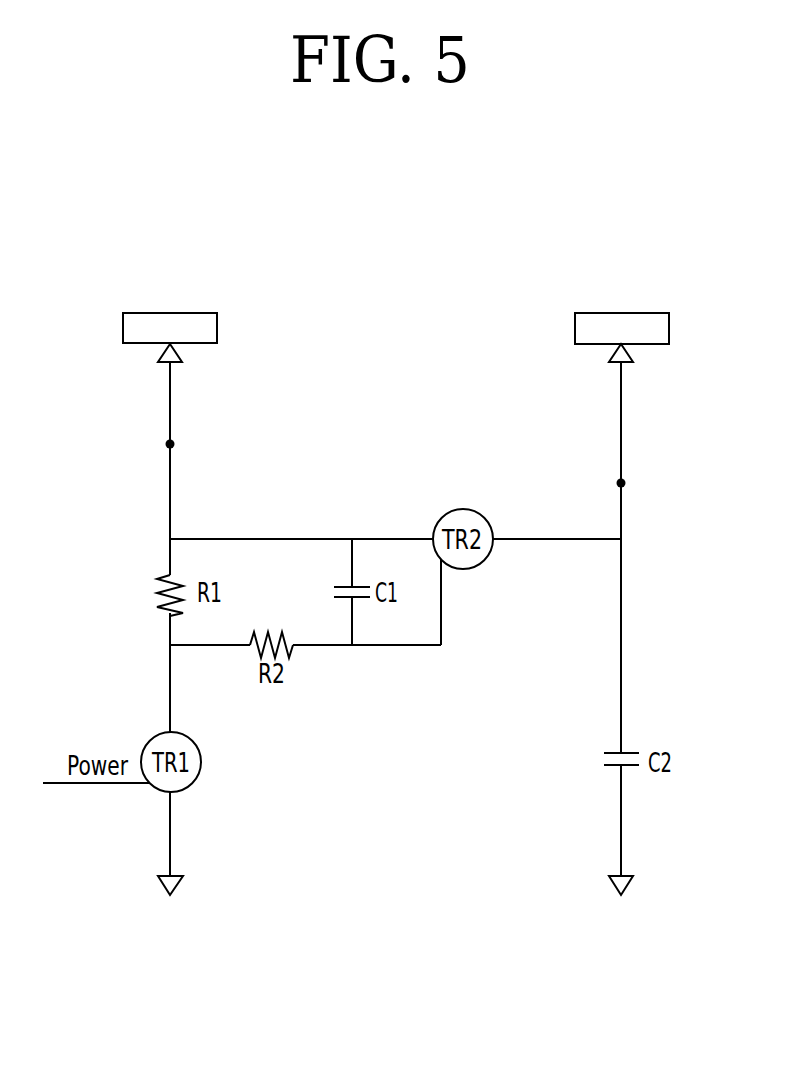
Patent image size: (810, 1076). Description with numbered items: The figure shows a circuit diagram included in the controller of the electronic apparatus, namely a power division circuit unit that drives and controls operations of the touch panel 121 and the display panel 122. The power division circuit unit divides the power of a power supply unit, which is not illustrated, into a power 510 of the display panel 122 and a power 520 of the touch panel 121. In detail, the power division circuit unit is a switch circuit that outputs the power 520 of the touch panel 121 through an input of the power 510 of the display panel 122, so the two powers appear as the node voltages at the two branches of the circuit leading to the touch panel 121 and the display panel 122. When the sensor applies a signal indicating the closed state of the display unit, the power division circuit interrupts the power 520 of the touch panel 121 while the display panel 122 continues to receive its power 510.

The touch panel 121 is at (622, 337).
The display panel 122 is at (170, 337).
The power of the display panel 510 is at (225, 443).
The power of the touch panel 520 is at (675, 483).